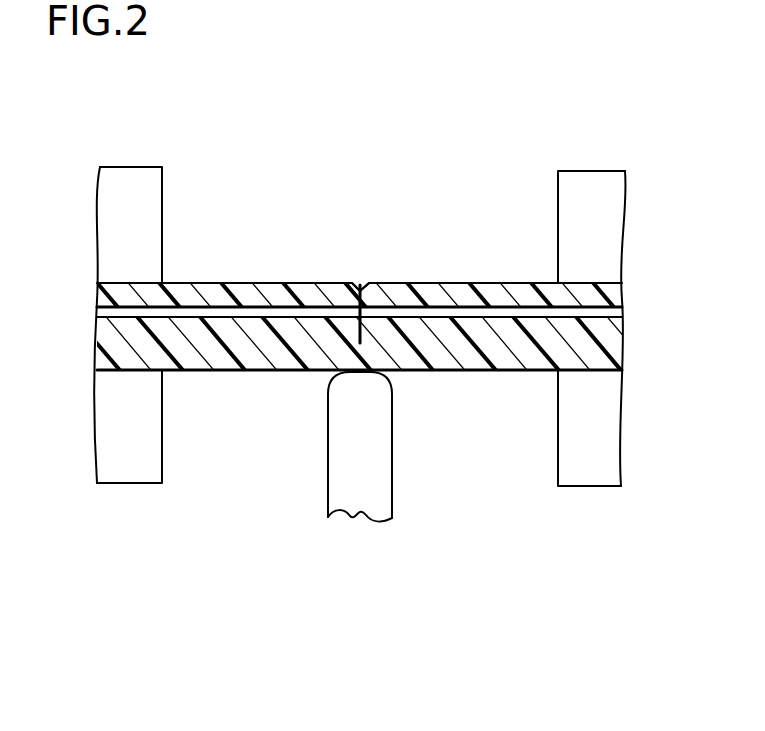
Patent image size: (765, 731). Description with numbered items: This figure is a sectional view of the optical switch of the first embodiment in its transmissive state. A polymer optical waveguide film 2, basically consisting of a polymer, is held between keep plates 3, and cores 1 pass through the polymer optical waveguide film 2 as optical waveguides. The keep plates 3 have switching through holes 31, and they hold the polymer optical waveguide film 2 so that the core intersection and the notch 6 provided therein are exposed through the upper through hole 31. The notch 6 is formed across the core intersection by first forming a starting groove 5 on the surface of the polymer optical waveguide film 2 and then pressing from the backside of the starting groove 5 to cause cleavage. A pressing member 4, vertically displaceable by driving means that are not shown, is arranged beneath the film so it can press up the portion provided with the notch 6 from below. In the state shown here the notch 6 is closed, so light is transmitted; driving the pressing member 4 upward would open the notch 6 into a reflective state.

The core 1 is at (310, 311).
The polymer optical waveguide film 2 is at (655, 283).
The keep plate 3 is at (592, 193).
The switching through hole 31 is at (210, 232).
The pressing member 4 is at (358, 493).
The starting groove 5 is at (361, 287).
The notch 6 is at (368, 336).